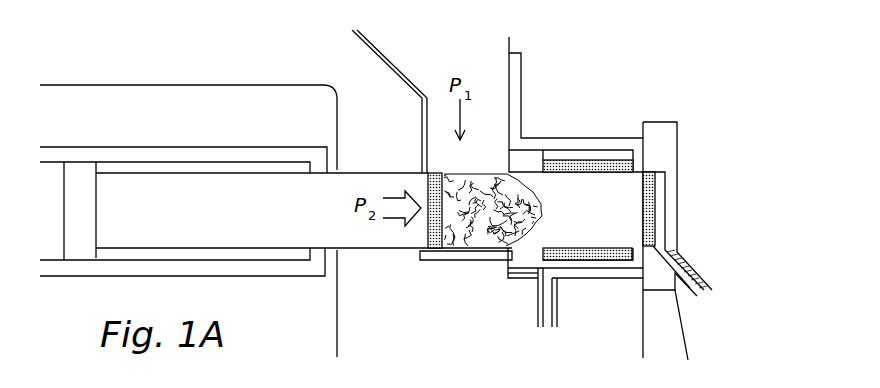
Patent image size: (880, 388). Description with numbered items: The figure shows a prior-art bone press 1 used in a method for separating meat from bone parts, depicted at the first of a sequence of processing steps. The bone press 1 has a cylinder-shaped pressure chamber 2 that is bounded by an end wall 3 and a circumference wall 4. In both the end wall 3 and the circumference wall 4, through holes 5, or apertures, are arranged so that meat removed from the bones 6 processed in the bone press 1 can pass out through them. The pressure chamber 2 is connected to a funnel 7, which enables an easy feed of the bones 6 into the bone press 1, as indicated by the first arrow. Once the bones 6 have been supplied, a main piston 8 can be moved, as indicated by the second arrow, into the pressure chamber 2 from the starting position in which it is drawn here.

The bone press 1 is at (647, 54).
The pressure chamber 2 is at (569, 221).
The end wall 3 is at (643, 218).
The circumference wall 4 is at (578, 173).
The through holes 5 is at (590, 160).
The bones 6 is at (492, 186).
The funnel 7 is at (390, 62).
The main piston 8 is at (381, 248).